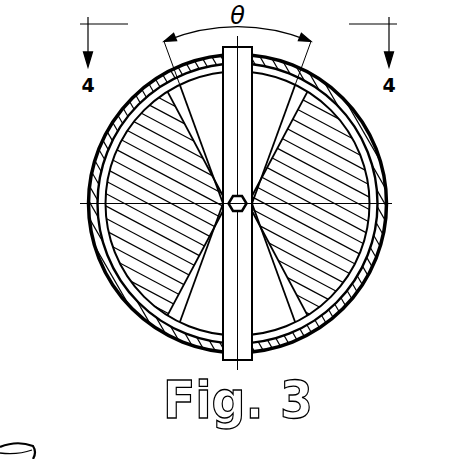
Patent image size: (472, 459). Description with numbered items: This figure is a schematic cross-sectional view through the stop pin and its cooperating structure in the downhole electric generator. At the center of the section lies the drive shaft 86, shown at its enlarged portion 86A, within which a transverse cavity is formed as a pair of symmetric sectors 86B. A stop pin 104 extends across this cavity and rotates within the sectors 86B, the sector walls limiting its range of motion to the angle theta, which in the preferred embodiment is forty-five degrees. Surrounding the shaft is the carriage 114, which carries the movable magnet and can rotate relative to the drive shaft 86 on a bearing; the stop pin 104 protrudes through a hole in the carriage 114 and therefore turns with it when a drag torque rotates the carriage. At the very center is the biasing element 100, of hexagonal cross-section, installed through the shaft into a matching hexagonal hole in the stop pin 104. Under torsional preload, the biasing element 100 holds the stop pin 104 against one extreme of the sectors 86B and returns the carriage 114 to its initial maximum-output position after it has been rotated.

The carriage 114 is at (108, 136).
The enlarged portion 86A is at (132, 278).
The symmetric sectors 86B is at (263, 217).
The biasing element 100 is at (226, 208).
The stop pin 104 is at (225, 352).
The drive shaft 86 is at (45, 458).